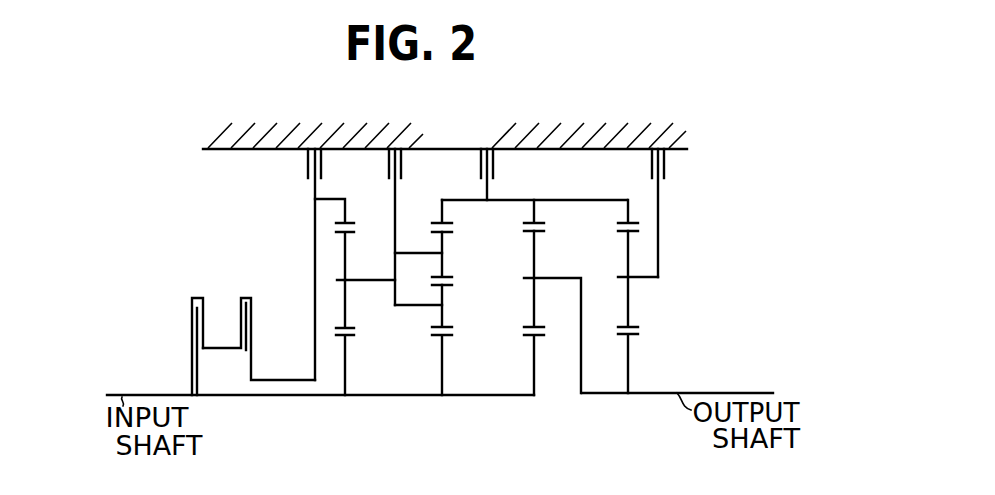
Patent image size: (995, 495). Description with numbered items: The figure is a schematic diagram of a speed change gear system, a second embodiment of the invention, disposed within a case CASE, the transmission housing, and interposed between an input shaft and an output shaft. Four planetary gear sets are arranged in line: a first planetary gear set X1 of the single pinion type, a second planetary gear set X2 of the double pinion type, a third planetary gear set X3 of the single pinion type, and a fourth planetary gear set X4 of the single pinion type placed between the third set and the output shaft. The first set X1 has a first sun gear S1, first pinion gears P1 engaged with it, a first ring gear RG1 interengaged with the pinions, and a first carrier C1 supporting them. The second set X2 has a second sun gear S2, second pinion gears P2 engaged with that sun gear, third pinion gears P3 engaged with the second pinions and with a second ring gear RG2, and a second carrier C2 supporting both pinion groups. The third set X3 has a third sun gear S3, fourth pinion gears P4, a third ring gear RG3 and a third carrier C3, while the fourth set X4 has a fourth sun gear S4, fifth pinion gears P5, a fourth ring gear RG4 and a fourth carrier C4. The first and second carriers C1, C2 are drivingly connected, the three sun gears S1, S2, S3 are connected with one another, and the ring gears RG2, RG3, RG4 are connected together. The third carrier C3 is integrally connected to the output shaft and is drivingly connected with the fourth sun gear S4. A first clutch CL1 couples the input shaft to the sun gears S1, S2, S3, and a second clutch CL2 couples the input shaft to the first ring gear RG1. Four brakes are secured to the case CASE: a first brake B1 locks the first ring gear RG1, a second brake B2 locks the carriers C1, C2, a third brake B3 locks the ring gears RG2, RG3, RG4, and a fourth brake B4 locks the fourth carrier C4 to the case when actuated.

The case CASE is at (445, 132).
The first clutch CL1 is at (187, 331).
The second clutch CL2 is at (259, 323).
The first brake B1 is at (296, 264).
The second brake B2 is at (376, 227).
The third brake B3 is at (503, 174).
The fourth brake B4 is at (675, 213).
The first ring gear RG1 is at (340, 213).
The second ring gear RG2 is at (437, 218).
The third ring gear RG3 is at (537, 212).
The fourth ring gear RG4 is at (628, 212).
The first carrier C1 is at (367, 278).
The second carrier C2 is at (418, 256).
The third carrier C3 is at (562, 277).
The fourth carrier C4 is at (638, 278).
The first pinion gears P1 is at (348, 312).
The second pinion gears P2 is at (444, 318).
The third pinion gears P3 is at (445, 260).
The fourth pinion gears P4 is at (532, 298).
The fifth pinion gears P5 is at (629, 312).
The first sun gear S1 is at (347, 358).
The second sun gear S2 is at (442, 360).
The third sun gear S3 is at (537, 357).
The fourth sun gear S4 is at (630, 355).
The first planetary gear set X1 is at (337, 350).
The second planetary gear set X2 is at (434, 348).
The third planetary gear set X3 is at (527, 347).
The fourth planetary gear set X4 is at (620, 348).